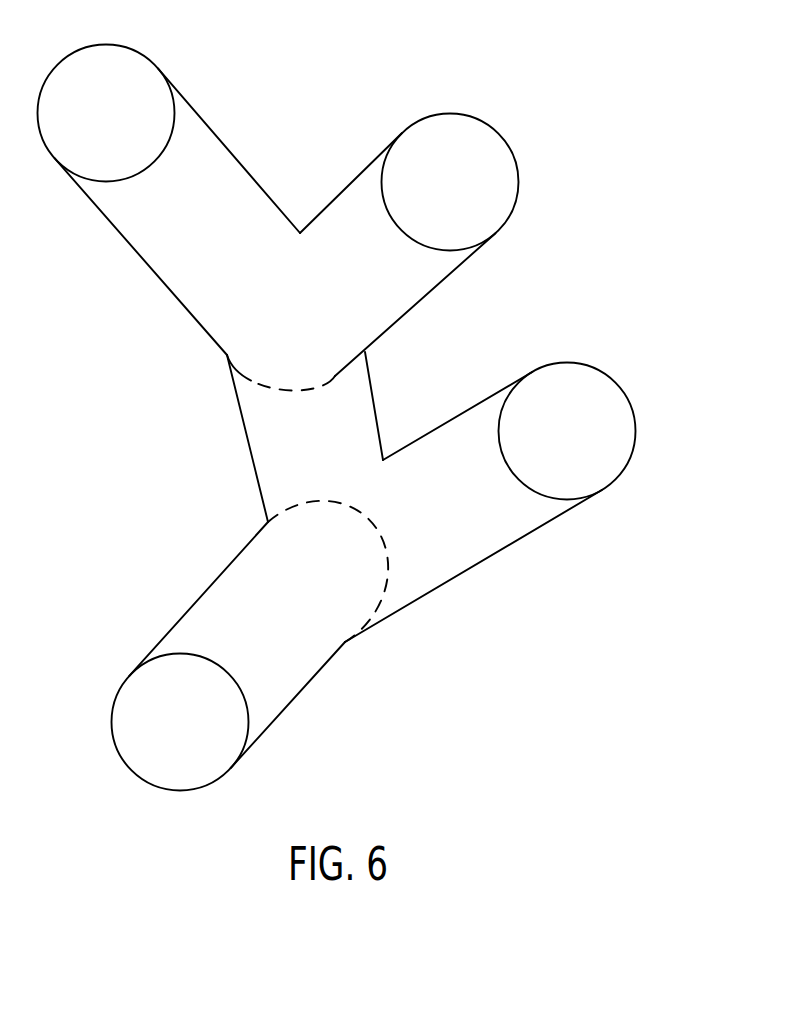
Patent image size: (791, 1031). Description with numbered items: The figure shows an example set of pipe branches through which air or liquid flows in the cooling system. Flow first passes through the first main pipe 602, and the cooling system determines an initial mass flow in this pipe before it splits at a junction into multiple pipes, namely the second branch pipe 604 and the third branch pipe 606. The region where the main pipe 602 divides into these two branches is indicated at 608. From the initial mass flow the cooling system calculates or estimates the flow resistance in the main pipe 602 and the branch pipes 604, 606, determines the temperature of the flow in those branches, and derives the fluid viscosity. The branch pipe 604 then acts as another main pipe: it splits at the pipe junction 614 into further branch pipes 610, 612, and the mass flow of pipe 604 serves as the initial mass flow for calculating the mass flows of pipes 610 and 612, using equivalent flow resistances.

The first main pipe 602 is at (125, 682).
The second branch pipe 604 is at (258, 437).
The third branch pipe 606 is at (620, 383).
The lower junction cross-section 608 is at (268, 521).
The branch pipe 610 is at (165, 70).
The branch pipe 612 is at (517, 206).
The pipe junction 614 is at (337, 375).